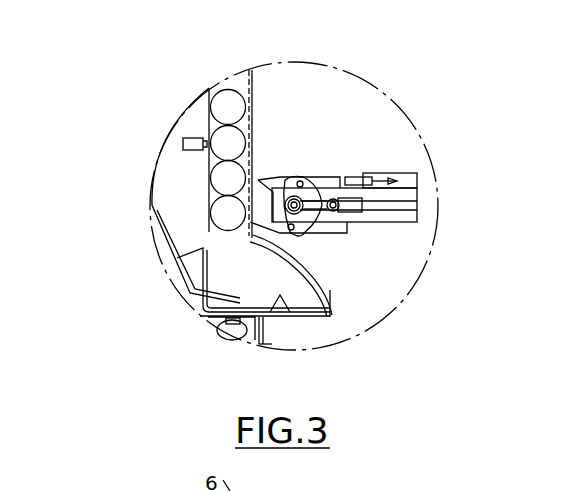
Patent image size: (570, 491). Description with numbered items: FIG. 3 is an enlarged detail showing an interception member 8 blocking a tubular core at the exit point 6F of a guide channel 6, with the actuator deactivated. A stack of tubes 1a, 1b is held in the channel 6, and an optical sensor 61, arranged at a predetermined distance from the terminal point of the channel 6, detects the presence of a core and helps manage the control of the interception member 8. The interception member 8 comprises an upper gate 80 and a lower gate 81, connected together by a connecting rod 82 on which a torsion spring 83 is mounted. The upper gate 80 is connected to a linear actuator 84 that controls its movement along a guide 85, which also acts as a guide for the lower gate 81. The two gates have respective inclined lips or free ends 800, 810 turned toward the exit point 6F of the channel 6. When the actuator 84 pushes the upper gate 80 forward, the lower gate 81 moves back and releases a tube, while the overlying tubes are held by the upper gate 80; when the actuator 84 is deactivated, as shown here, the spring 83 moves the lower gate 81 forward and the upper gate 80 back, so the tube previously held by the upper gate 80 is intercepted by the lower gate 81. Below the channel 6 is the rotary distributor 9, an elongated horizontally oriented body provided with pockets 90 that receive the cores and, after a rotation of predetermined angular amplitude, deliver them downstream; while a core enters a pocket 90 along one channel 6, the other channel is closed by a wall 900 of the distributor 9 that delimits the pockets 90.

The guide channel 6 is at (247, 80).
The optical sensor 61 is at (185, 138).
The exit point of the channel 6F is at (225, 243).
The tube 1a is at (230, 213).
The tube 1b is at (226, 178).
The inclined lip of the upper gate 800 is at (258, 178).
The inclined lip of the lower gate 810 is at (245, 223).
The wall of the distributor 900 is at (197, 261).
The rotary distributor 9 is at (233, 328).
The pocket 90 is at (278, 297).
The interception member 8 is at (370, 232).
The upper gate 80 is at (333, 176).
The lower gate 81 is at (312, 235).
The connecting rod 82 is at (313, 233).
The torsion spring 83 is at (297, 202).
The linear actuator 84 is at (404, 180).
The guide 85 is at (417, 207).